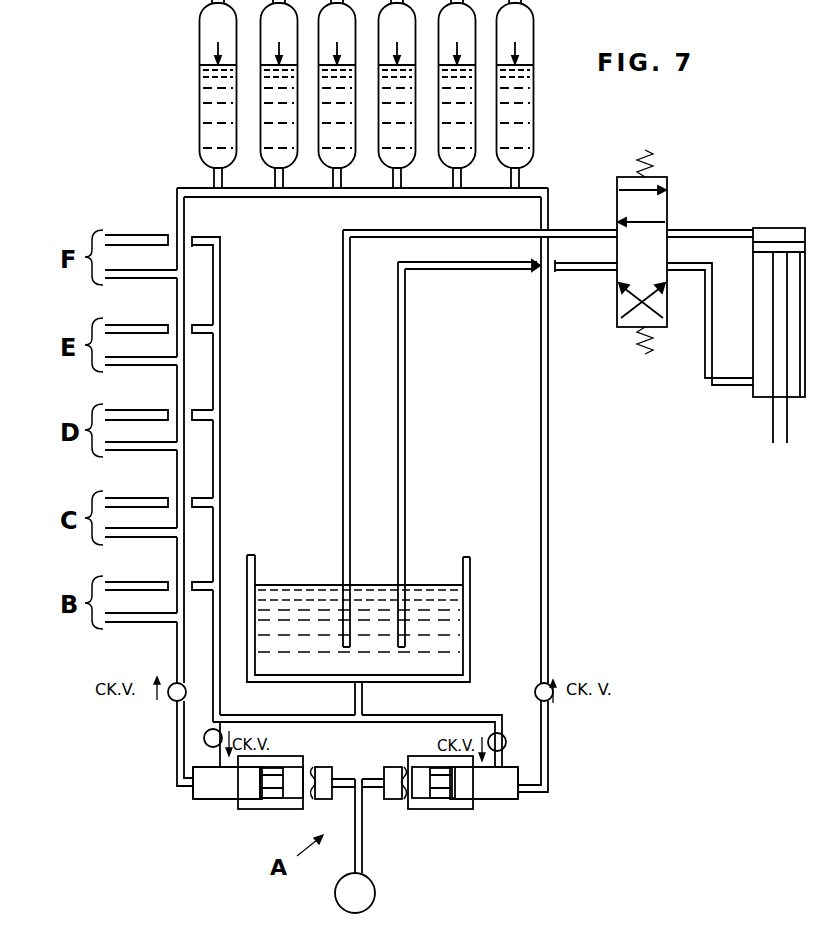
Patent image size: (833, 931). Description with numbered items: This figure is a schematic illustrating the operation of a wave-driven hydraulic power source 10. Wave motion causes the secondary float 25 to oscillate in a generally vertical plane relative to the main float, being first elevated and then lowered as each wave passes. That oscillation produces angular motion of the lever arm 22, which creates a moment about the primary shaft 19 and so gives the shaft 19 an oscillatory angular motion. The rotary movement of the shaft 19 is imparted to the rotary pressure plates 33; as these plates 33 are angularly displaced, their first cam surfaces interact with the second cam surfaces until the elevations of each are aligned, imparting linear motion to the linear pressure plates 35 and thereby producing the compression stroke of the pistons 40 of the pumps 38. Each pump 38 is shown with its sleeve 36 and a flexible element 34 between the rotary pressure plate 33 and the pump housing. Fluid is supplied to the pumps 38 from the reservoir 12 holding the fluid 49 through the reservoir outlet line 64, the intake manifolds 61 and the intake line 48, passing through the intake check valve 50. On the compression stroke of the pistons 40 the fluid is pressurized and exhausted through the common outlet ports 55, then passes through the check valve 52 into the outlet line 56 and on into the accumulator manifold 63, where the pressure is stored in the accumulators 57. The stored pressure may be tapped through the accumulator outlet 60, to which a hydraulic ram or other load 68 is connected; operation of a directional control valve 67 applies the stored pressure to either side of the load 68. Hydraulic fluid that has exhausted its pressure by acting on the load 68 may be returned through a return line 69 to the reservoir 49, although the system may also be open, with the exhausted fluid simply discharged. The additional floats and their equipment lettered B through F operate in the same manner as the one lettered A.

The accumulator 57 is at (201, 104).
The accumulator manifold 63 is at (326, 197).
The accumulator outlet 60 is at (569, 232).
The directional control valve 67 is at (668, 192).
The hydraulic ram or other load 68 is at (800, 229).
The return line 69 is at (408, 422).
The reservoir 12 is at (472, 573).
The reservoir 49 is at (450, 645).
The outlet line 56 is at (176, 650).
The check valve 52 is at (170, 700).
The intake check valve 50 is at (204, 739).
The intake line 48 is at (212, 755).
The intake manifold 61 is at (260, 717).
The reservoir outlet line 64 is at (363, 701).
The sleeve 36 is at (303, 764).
The diaphragm 34 is at (318, 768).
The primary shaft 19 is at (362, 780).
The hydraulic system 10 is at (131, 788).
The common outlet port 55 is at (192, 790).
The pump 38 is at (206, 806).
The piston 40 is at (271, 791).
The linear pressure plate 35 is at (293, 800).
The rotary pressure plate 33 is at (333, 800).
The lever arm 22 is at (370, 845).
The secondary float 25 is at (376, 891).